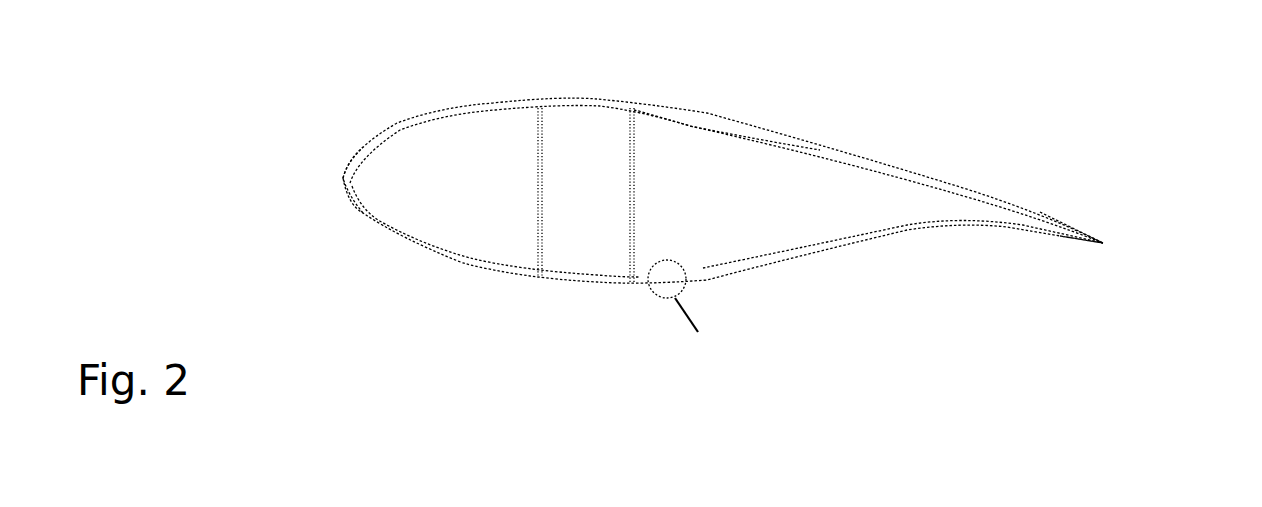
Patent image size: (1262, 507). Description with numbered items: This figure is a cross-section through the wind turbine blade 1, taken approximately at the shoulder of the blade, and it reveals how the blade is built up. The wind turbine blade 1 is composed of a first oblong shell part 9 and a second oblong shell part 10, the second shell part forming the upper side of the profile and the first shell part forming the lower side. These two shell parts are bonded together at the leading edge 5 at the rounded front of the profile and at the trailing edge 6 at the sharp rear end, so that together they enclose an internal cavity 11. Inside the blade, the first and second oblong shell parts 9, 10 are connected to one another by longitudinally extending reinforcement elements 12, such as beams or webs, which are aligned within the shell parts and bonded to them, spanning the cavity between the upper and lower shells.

The wind turbine blade 1 is at (722, 192).
The leading edge 5 is at (343, 178).
The trailing edge 6 is at (1103, 243).
The first oblong shell part 9 is at (505, 277).
The second oblong shell part 10 is at (493, 104).
The internal cavity 11 is at (690, 182).
The reinforcement elements 12 is at (540, 191).